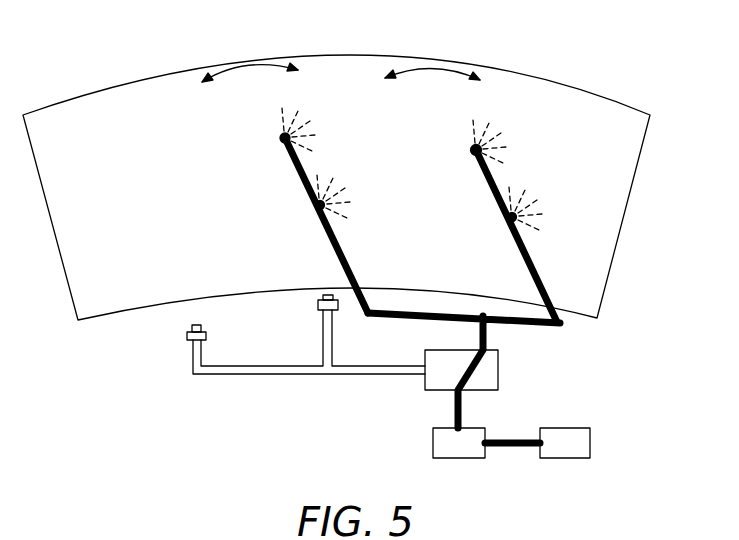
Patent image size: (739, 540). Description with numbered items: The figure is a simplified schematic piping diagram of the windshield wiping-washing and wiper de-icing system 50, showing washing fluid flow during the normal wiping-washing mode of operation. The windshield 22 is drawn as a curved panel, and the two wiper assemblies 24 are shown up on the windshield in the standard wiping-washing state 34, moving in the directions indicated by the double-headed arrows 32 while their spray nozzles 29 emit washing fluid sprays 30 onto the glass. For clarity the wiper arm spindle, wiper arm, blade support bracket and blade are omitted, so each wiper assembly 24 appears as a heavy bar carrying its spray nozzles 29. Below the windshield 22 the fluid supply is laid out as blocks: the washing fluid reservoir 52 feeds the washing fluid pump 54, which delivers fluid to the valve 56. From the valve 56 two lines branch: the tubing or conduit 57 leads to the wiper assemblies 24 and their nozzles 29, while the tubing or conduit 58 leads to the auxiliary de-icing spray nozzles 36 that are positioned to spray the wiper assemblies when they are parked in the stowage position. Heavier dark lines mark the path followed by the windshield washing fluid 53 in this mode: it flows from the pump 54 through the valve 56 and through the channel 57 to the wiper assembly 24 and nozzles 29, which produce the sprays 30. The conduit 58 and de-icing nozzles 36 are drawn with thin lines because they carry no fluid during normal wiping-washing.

The windshield 22 is at (115, 147).
The wiper assembly 24 is at (562, 168).
The spray nozzles 29 is at (474, 148).
The washing fluid spray 30 is at (498, 128).
The direction 32 is at (428, 65).
The standard wiping-washing state 34 is at (158, 187).
The auxiliary de-icing spray nozzle 36 is at (338, 303).
The windshield wiping-washing and wiper de-icing system 50 is at (648, 245).
The washing fluid reservoir 52 is at (580, 455).
The windshield washing fluid 53 is at (522, 430).
The washing fluid pump 54 is at (475, 455).
The valve 56 is at (498, 363).
The tubing or conduit 57 is at (478, 336).
The tubing or conduit 58 is at (317, 375).